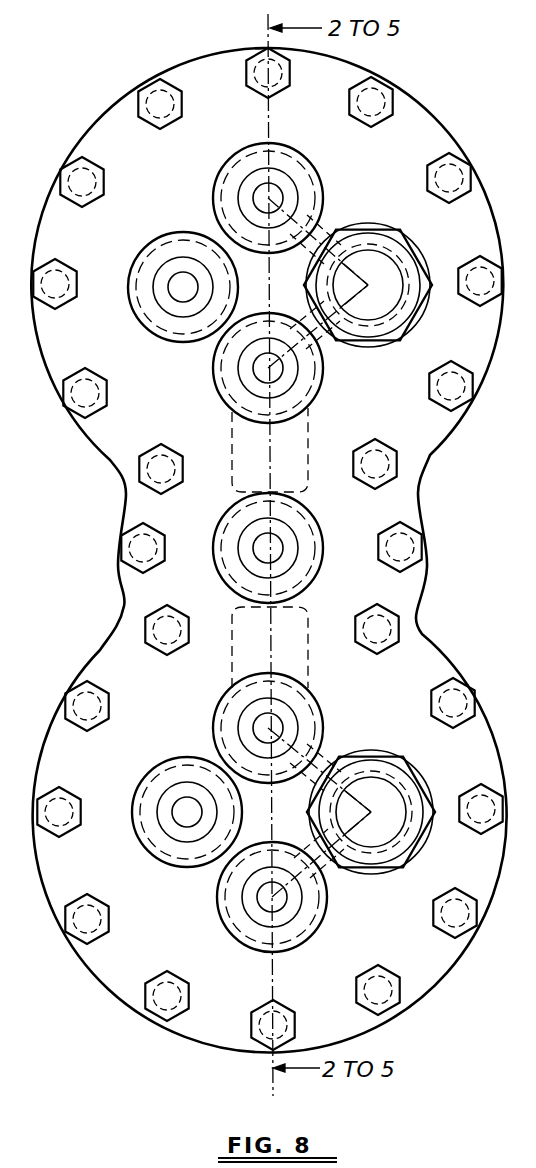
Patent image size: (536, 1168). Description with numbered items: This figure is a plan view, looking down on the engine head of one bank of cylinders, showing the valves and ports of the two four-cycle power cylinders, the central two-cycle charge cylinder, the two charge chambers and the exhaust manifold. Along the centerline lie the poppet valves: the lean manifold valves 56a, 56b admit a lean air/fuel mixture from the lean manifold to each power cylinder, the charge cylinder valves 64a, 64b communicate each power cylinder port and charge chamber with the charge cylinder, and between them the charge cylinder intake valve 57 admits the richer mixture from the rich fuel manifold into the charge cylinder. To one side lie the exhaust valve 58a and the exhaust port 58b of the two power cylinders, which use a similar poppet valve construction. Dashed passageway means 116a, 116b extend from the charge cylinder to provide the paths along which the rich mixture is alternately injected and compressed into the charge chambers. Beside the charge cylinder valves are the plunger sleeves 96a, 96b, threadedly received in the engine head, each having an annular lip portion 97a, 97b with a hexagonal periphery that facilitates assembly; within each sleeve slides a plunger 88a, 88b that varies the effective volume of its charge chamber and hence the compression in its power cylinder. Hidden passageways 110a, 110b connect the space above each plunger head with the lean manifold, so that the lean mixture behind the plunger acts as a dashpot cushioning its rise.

The lean manifold valve 56a is at (308, 189).
The lean manifold valve 56b is at (252, 930).
The charge cylinder intake valve 57 is at (305, 568).
The exhaust valve 58a is at (170, 323).
The exhaust port 58b is at (177, 845).
The charge cylinder valve 64a is at (235, 390).
The charge cylinder valve 64b is at (308, 718).
The plunger 88a is at (388, 300).
The plunger 88b is at (377, 850).
The plunger sleeve 96a is at (388, 330).
The plunger sleeve 96b is at (413, 823).
The annular lip portion 97a is at (417, 257).
The annular lip portion 97b is at (420, 782).
The passageway 110a is at (296, 280).
The passageway 110b is at (322, 862).
The passageway means 116a is at (296, 446).
The passageway means 116b is at (305, 660).